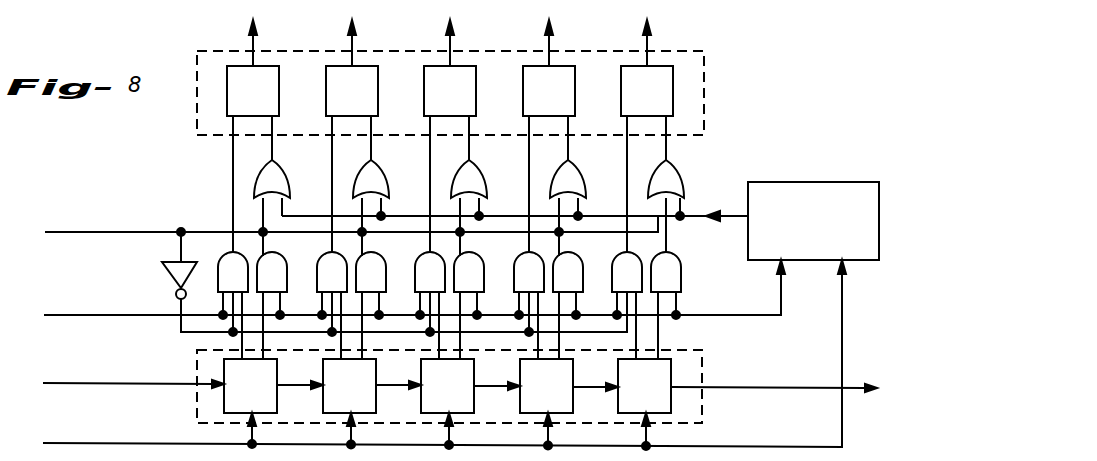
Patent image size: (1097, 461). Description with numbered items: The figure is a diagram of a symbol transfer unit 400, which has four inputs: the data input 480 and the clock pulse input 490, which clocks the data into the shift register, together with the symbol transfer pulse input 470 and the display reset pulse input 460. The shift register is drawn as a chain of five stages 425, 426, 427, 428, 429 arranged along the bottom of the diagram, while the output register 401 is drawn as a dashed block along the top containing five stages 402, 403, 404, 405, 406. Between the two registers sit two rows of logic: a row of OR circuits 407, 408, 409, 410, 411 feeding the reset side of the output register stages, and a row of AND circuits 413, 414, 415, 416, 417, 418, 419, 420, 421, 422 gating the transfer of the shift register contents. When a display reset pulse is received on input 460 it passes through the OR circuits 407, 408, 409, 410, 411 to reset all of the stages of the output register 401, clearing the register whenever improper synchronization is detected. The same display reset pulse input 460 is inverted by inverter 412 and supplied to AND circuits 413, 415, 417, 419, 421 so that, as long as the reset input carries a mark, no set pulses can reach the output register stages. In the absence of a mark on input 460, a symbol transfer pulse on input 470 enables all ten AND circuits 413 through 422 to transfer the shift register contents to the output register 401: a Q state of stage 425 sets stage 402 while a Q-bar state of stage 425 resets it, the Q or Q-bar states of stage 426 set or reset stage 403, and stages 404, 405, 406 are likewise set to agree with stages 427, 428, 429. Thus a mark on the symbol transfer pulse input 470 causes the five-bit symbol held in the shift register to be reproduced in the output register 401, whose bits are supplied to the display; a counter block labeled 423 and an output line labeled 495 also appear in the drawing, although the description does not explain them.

The symbol transfer unit 400 is at (194, 187).
The output register 401 is at (705, 99).
The stage of output register 402 is at (276, 91).
The stage of output register 403 is at (373, 91).
The stage of output register 404 is at (471, 91).
The stage of output register 405 is at (569, 91).
The stage of output register 406 is at (666, 92).
The OR circuit 407 is at (275, 181).
The OR circuit 408 is at (373, 181).
The OR circuit 409 is at (471, 181).
The OR circuit 410 is at (570, 181).
The OR circuit 411 is at (673, 182).
The inverter 412 is at (167, 278).
The AND circuit 413 is at (220, 269).
The AND circuit 414 is at (279, 272).
The AND circuit 415 is at (320, 280).
The AND circuit 416 is at (378, 272).
The AND circuit 417 is at (418, 280).
The AND circuit 418 is at (476, 272).
The AND circuit 419 is at (515, 280).
The AND circuit 420 is at (574, 272).
The AND circuit 421 is at (614, 280).
The AND circuit 422 is at (680, 272).
The counter 423 is at (818, 192).
The stage of shift register 425 is at (270, 396).
The stage of shift register 426 is at (369, 396).
The stage of shift register 427 is at (467, 396).
The stage of shift register 428 is at (567, 396).
The stage of shift register 429 is at (629, 372).
The display reset pulse input 460 is at (72, 230).
The symbol transfer pulse input 470 is at (106, 312).
The data input 480 is at (120, 373).
The clock pulse input 490 is at (120, 431).
The serial output line 495 is at (757, 385).